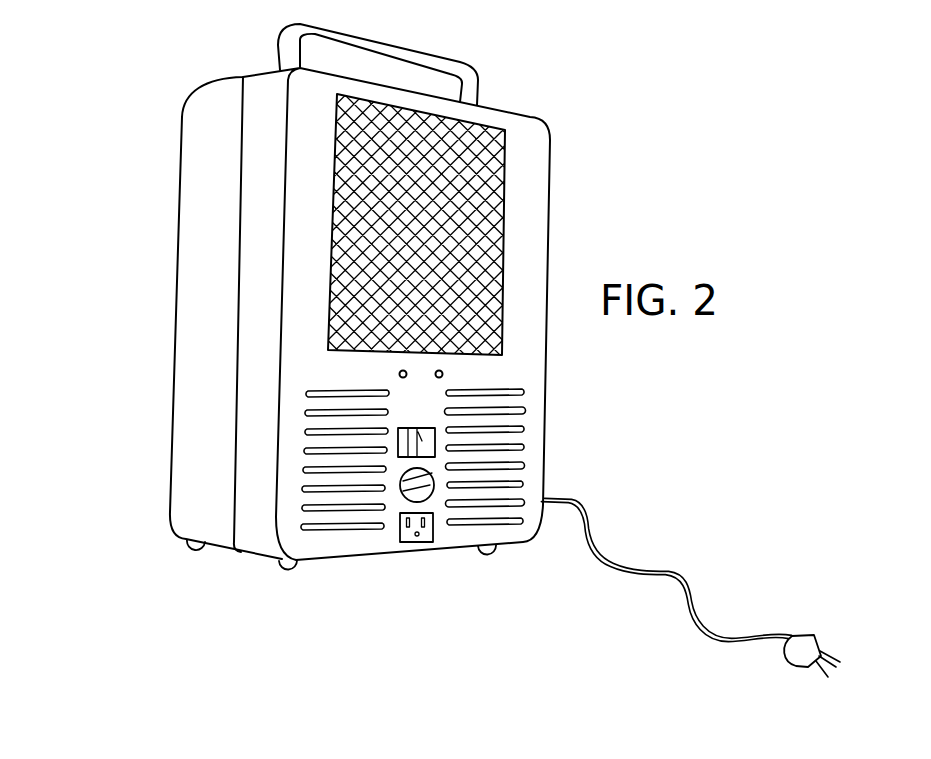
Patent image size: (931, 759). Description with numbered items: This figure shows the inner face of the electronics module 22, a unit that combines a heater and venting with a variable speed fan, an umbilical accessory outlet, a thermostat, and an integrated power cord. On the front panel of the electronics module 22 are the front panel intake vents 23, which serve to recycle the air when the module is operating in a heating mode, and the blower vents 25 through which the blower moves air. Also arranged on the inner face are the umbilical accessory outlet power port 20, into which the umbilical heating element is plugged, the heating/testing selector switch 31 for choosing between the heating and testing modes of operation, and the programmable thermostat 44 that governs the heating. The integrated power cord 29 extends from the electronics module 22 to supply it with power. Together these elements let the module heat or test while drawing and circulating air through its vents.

The umbilical accessory outlet power port 20 is at (430, 535).
The electronics module 22 is at (175, 269).
The front panel intake vents 23 is at (307, 508).
The blower vents 25 is at (487, 143).
The integrated power cord 29 is at (657, 568).
The heating/testing selector switch 31 is at (400, 490).
The programmable thermostat 44 is at (430, 429).